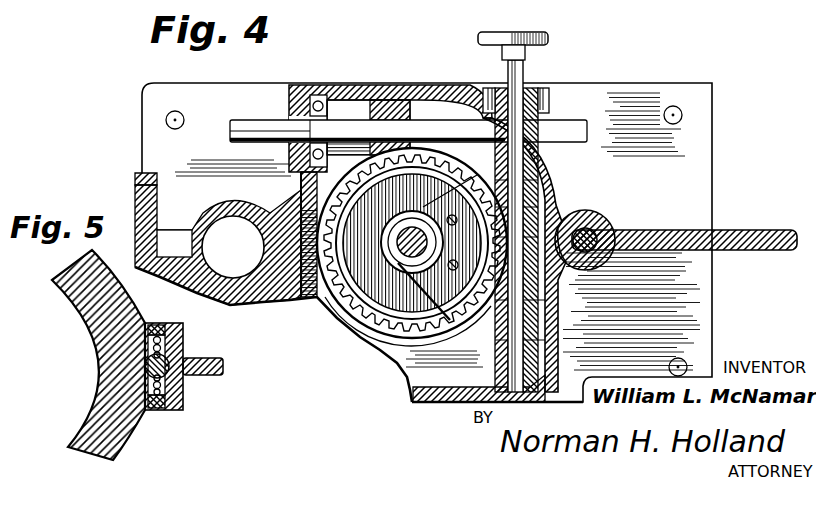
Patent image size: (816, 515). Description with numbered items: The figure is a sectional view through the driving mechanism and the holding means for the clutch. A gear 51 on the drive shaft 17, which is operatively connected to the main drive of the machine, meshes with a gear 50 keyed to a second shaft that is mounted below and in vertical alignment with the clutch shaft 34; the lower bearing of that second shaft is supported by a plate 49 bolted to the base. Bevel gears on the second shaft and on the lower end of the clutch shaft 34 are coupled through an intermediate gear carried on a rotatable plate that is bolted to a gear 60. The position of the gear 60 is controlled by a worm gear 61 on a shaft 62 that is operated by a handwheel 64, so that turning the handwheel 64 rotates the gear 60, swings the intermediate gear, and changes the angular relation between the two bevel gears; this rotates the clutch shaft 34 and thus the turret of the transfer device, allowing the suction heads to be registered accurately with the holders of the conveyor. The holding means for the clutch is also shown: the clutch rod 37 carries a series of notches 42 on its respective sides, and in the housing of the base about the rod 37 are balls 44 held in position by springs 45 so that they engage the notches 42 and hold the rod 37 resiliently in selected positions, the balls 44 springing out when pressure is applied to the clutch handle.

In FIG. 4, the drive shaft 17 is at (248, 120).
In FIG. 4, the gear 51 is at (383, 100).
In FIG. 4, the handwheel 64 is at (525, 32).
In FIG. 4, the shaft 62 is at (527, 73).
In FIG. 4, the worm gear 61 is at (558, 217).
In FIG. 4, the clutch rod 37 is at (597, 227).
In FIG. 5, the clutch rod 37 is at (147, 365).
In FIG. 4, the plate 49 is at (345, 306).
In FIG. 4, the gear 50 is at (395, 285).
In FIG. 4, the clutch shaft 34 is at (413, 257).
In FIG. 4, the gear 60 is at (457, 302).
In FIG. 5, the springs 45 is at (165, 343).
In FIG. 5, the balls 44 is at (163, 357).
In FIG. 5, the notches 42 is at (187, 383).